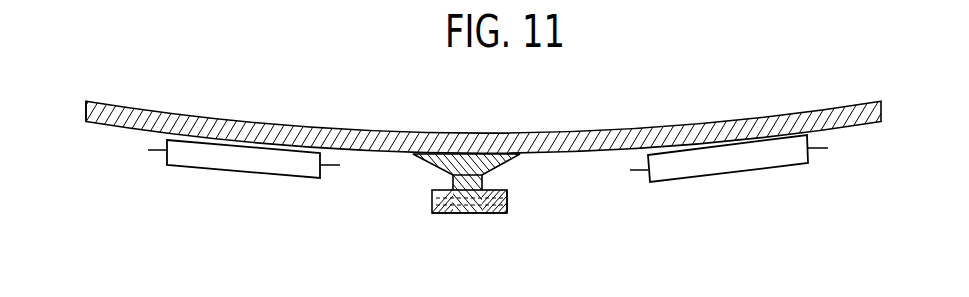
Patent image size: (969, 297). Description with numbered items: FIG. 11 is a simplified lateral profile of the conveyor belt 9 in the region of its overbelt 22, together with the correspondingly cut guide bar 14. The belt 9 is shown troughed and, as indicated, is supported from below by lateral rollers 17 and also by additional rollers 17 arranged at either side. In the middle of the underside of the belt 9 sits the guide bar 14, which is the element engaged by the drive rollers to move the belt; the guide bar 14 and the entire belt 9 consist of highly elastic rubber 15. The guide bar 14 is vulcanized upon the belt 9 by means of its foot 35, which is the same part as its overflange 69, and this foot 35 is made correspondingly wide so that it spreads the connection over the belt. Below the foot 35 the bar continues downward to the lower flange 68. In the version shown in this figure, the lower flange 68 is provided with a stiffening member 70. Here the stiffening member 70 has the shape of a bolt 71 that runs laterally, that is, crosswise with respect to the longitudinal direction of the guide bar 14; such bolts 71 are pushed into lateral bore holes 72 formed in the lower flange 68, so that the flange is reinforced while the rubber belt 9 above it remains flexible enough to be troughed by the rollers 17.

The belt 9 is at (218, 122).
The overbelt 22 is at (122, 133).
The lateral rollers 17 is at (288, 163).
The overflange 69 is at (488, 131).
The foot 35 is at (483, 151).
The guide bar 14 is at (471, 182).
The highly elastic rubber 15 is at (483, 178).
The lower flange 68 is at (476, 228).
The stiffening member 70 is at (460, 213).
The bolt 71 is at (432, 200).
The lateral bore holes 72 is at (508, 208).